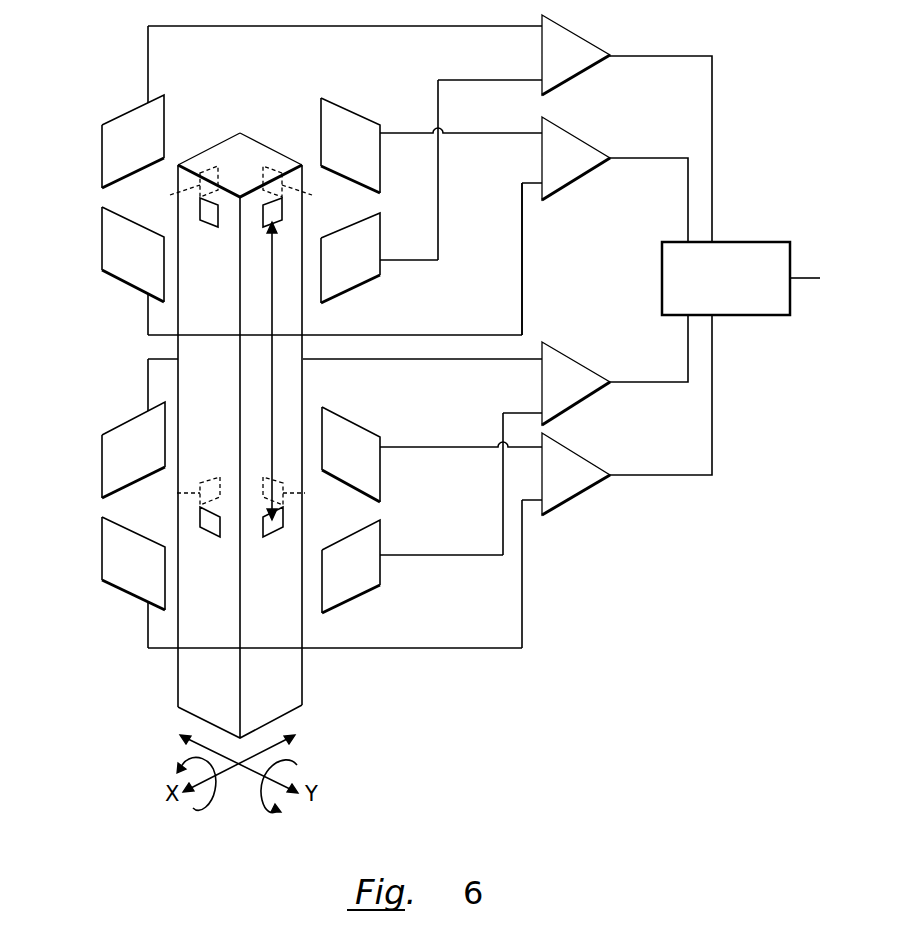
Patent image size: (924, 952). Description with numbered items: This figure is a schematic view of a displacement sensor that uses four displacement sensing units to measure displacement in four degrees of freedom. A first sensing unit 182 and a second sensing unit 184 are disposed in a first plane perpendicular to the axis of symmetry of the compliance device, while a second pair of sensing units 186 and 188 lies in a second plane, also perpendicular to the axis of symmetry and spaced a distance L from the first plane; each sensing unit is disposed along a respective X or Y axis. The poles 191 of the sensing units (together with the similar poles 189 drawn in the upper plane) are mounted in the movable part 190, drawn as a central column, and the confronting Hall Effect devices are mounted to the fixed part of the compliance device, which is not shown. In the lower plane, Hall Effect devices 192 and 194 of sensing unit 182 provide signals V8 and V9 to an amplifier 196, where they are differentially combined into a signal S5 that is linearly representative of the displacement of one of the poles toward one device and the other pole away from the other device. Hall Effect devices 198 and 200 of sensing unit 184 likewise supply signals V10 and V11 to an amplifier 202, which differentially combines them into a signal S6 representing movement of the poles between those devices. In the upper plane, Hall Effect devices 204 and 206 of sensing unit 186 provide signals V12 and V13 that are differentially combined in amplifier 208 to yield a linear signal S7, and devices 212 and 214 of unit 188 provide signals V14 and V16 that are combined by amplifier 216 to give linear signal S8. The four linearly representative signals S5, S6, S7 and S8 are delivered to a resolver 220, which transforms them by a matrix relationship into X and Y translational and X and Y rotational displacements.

The first sensing unit 182 is at (391, 596).
The second sensing unit 184 is at (94, 587).
The sensing unit 186 is at (391, 278).
The sensing unit 188 is at (94, 275).
The sensor elements 189 is at (200, 210).
The movable part 190 is at (178, 700).
The poles 191 is at (200, 517).
The Hall Effect device 192 is at (382, 530).
The Hall Effect device 194 is at (128, 420).
The amplifier 196 is at (566, 352).
The Hall Effect device 198 is at (102, 528).
The Hall Effect device 200 is at (357, 422).
The amplifier 202 is at (576, 452).
The Hall Effect device 204 is at (381, 240).
The Hall Effect device 206 is at (137, 112).
The amplifier 208 is at (578, 27).
The Hall Effect device 212 is at (102, 234).
The Hall Effect device 214 is at (347, 113).
The amplifier 216 is at (580, 130).
The resolver 220 is at (742, 242).
The signal V8 is at (460, 555).
The signal V9 is at (415, 359).
The signal V10 is at (474, 648).
The signal V11 is at (452, 447).
The signal V12 is at (440, 190).
The signal V13 is at (462, 26).
The signal V14 is at (526, 268).
The signal V16 is at (456, 133).
The linear signal S5 is at (622, 384).
The linear signal S6 is at (628, 476).
The linear signal S7 is at (638, 56).
The linear signal S8 is at (630, 162).
The distance L is at (272, 388).